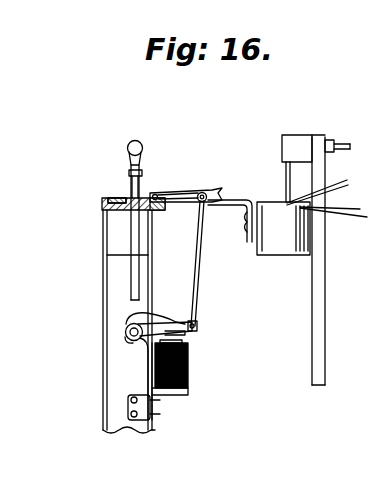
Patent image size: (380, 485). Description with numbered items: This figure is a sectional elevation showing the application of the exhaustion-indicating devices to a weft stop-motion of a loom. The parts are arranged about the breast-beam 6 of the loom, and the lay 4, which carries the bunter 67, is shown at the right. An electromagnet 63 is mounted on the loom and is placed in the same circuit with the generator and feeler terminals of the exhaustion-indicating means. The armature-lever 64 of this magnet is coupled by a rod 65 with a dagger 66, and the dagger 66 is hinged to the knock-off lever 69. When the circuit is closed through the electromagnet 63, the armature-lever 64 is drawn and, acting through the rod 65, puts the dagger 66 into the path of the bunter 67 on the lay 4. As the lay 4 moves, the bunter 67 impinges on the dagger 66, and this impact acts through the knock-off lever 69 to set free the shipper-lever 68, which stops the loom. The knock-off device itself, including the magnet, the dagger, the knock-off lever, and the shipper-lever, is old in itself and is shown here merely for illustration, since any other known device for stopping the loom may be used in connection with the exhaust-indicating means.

The lay 4 is at (283, 228).
The breast-beam 6 is at (103, 247).
The electromagnet 63 is at (189, 380).
The armature-lever 64 is at (195, 325).
The rod 65 is at (193, 263).
The dagger 66 is at (197, 191).
The bunter 67 is at (241, 200).
The shipper-lever 68 is at (127, 180).
The knock-off lever 69 is at (111, 198).